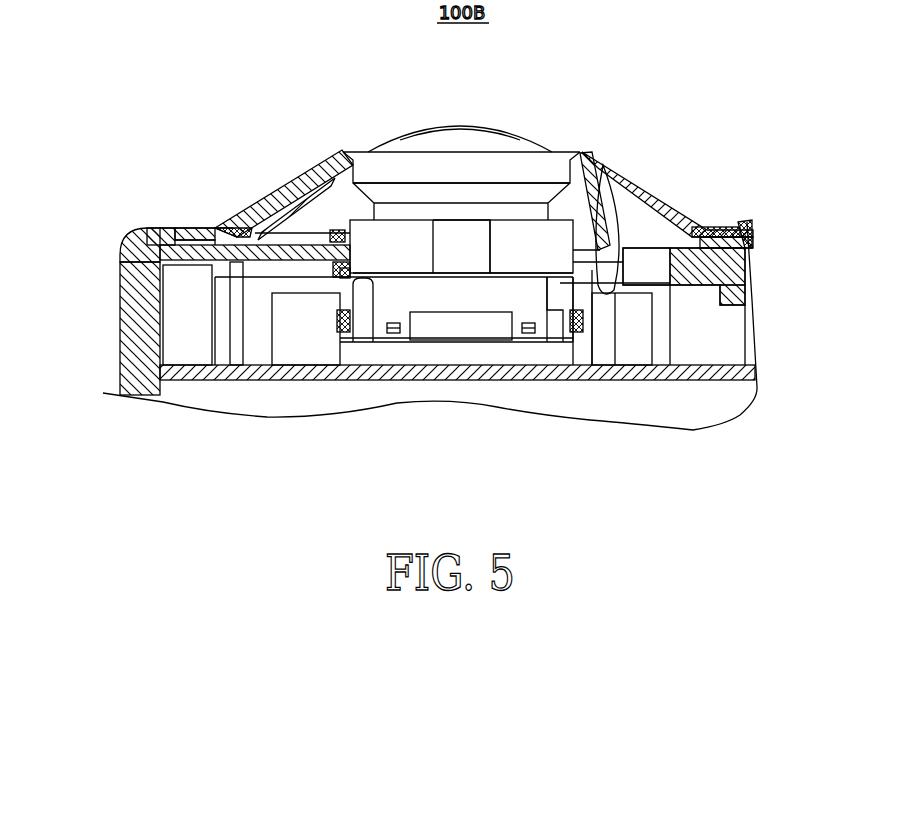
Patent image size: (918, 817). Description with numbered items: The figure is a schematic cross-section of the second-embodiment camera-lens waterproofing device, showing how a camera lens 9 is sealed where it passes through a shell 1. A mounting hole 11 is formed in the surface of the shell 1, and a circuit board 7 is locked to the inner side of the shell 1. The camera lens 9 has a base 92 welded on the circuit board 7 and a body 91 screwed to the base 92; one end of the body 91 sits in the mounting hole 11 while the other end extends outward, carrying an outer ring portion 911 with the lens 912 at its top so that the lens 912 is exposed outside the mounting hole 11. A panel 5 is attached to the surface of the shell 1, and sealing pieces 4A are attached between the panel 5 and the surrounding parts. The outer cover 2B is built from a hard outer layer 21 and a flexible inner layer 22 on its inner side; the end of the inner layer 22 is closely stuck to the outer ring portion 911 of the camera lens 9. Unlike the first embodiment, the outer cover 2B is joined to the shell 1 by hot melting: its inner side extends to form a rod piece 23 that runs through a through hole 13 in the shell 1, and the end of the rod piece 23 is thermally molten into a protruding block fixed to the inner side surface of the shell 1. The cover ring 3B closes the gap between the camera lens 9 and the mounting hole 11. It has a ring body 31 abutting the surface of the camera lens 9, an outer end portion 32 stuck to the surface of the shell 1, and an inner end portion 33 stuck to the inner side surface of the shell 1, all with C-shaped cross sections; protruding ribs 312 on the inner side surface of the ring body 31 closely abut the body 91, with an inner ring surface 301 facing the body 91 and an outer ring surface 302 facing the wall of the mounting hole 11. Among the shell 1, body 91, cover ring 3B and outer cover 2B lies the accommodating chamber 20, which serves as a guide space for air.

The shell 1 is at (730, 255).
The outer cover 2B is at (276, 118).
The panel 5 is at (190, 233).
The circuit board 7 is at (660, 382).
The camera lens 9 is at (428, 128).
The mounting hole 11 is at (372, 280).
The through hole 13 is at (632, 246).
The accommodating chamber 20 is at (368, 155).
The outer layer 21 is at (312, 190).
The inner layer 22 is at (290, 212).
The rod piece 23 is at (623, 243).
The ring body 31 is at (332, 248).
The outer end portion 32 is at (334, 230).
The inner end portion 33 is at (336, 277).
The cover ring 3B is at (343, 280).
The inner ring surface 301 is at (580, 275).
The outer ring surface 302 is at (604, 290).
The protruding ribs 312 is at (572, 278).
The sealing pieces 4A is at (735, 230).
The body 91 is at (463, 243).
The outer ring portion 911 is at (499, 171).
The lens 912 is at (473, 137).
The base 92 is at (460, 294).